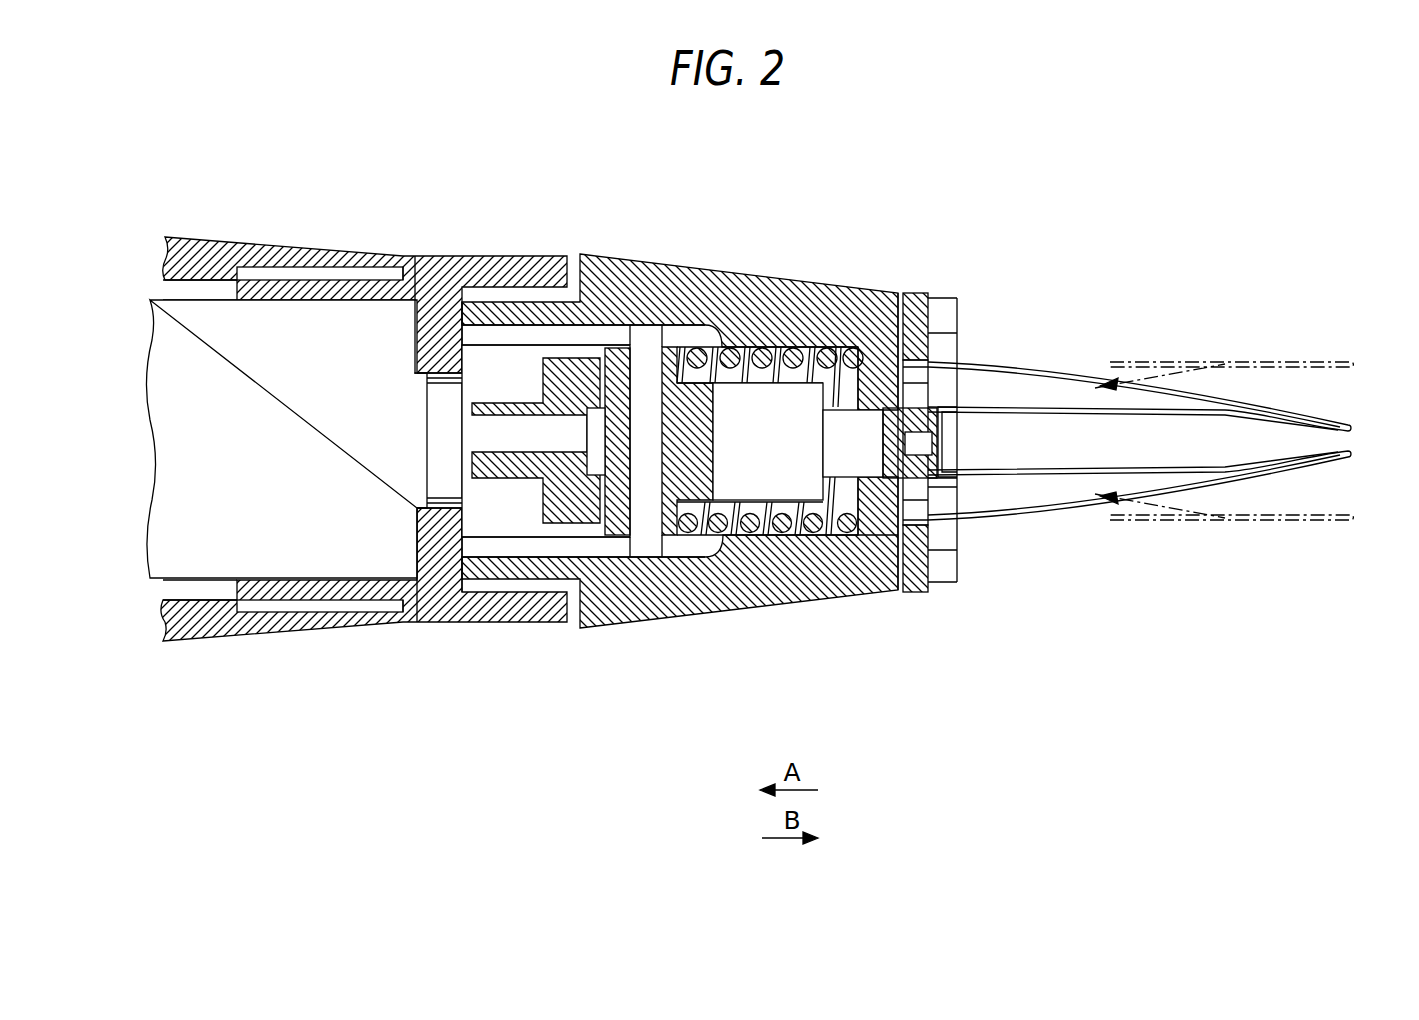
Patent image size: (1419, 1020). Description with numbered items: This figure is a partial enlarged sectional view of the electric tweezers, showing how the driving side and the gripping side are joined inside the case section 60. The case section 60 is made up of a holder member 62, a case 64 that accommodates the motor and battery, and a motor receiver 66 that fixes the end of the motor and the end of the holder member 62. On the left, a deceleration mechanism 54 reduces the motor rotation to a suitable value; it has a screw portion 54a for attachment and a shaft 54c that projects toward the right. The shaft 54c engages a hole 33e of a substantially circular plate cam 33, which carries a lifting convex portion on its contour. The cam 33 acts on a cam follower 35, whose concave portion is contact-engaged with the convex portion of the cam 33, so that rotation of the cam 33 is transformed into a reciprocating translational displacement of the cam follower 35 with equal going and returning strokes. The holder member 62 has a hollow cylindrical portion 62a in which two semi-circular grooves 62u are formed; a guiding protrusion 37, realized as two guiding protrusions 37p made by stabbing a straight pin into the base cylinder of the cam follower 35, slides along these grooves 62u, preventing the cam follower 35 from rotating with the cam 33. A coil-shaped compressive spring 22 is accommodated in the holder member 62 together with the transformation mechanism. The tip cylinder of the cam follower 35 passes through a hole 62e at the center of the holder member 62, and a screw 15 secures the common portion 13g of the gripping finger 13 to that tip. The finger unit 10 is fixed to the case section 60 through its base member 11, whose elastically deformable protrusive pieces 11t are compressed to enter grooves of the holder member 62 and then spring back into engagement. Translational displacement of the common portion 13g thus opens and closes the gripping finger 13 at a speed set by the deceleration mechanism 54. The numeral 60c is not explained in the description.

The case section 60 is at (217, 232).
The case 64 is at (310, 245).
The deceleration mechanism 54 is at (295, 565).
The screw portion 54a is at (443, 377).
The shaft 54c is at (522, 445).
The motor receiver 66 is at (413, 622).
The cam 33 is at (558, 358).
The hole 33e is at (940, 478).
The guiding protrusion 37 is at (640, 328).
The guiding protrusion 37p is at (668, 345).
The cam follower 35 is at (740, 397).
The coil-shaped compressive spring 22 is at (793, 350).
The holder member 62 is at (727, 605).
The hollow cylindrical portion 62a is at (477, 527).
The semi-circular groove 62u is at (617, 547).
The hole 62e is at (860, 480).
The spring chamber 60c is at (798, 537).
The base member 11 is at (937, 575).
The protrusive piece 11t is at (913, 291).
The common portion 13g is at (950, 405).
The screw 15 is at (953, 437).
The gripping finger 13 is at (1062, 362).
The finger unit 10 is at (1252, 492).